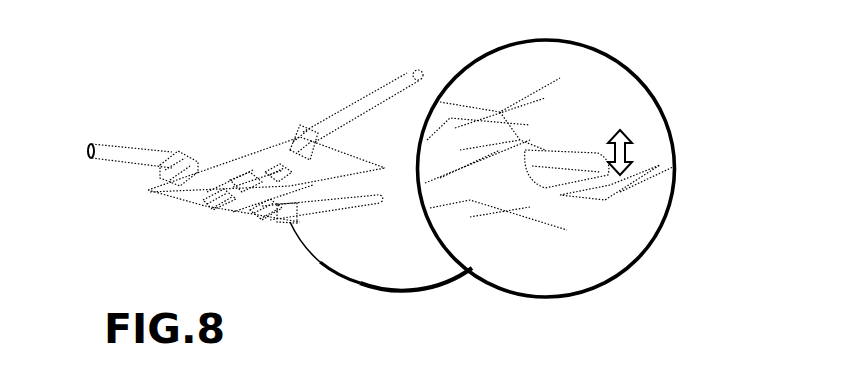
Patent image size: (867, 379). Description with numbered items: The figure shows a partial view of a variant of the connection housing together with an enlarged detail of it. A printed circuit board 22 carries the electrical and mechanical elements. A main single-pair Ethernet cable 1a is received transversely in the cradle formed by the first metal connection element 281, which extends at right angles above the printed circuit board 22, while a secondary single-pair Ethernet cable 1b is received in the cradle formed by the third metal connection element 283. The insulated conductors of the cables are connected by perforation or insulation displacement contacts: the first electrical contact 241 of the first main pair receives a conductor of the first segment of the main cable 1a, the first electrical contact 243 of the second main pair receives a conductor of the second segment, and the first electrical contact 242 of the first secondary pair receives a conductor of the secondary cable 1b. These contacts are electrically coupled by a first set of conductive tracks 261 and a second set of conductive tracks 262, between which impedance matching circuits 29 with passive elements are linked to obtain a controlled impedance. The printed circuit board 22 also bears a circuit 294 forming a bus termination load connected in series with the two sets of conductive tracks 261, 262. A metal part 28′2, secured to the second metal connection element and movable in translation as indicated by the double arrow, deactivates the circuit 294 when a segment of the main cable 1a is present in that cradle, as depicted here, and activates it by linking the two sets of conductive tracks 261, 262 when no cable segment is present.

The main single-pair Ethernet cable 1a is at (124, 146).
The secondary single-pair Ethernet cable 1b is at (373, 85).
The printed circuit board 22 is at (150, 191).
The first metal connection element 281 is at (178, 153).
The third metal connection element 283 is at (299, 133).
The impedance matching circuits 29 is at (242, 185).
The first electrical contact of the first secondary pair 242 is at (283, 173).
The first electrical contact of the first main pair 241 is at (207, 198).
The first electrical contact of the second main pair 243 is at (246, 210).
The circuit forming a bus termination load 294 is at (267, 212).
The first set of conductive tracks 261 is at (528, 143).
The second set of conductive tracks 262 is at (483, 163).
The metal part 28′2 is at (583, 198).